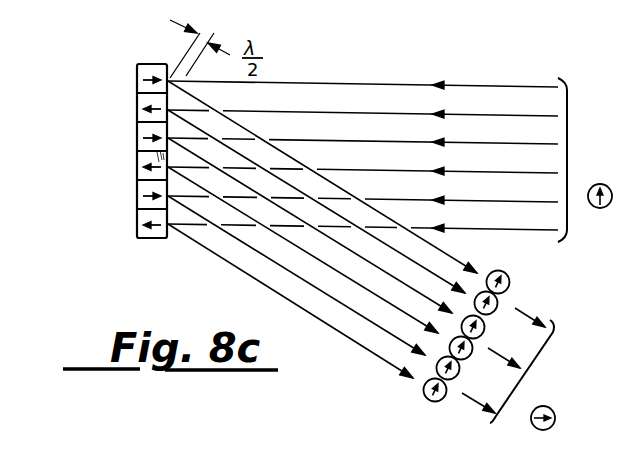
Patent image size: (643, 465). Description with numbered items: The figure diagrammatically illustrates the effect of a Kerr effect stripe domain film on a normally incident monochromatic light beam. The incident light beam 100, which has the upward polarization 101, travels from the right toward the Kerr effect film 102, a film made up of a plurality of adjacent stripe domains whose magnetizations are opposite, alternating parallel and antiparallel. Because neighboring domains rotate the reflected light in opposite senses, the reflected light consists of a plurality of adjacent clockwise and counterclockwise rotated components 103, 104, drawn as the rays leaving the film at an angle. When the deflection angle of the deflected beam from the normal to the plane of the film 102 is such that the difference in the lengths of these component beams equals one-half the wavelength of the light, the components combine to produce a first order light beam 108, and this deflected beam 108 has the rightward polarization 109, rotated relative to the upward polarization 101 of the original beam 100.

The incident light beam 100 is at (567, 162).
The upward polarization 101 is at (598, 208).
The Kerr effect film 102 is at (142, 240).
The rotated component 103 is at (440, 245).
The rotated component 104 is at (442, 278).
The first order light beam 108 is at (531, 375).
The rightward polarization 109 is at (555, 421).